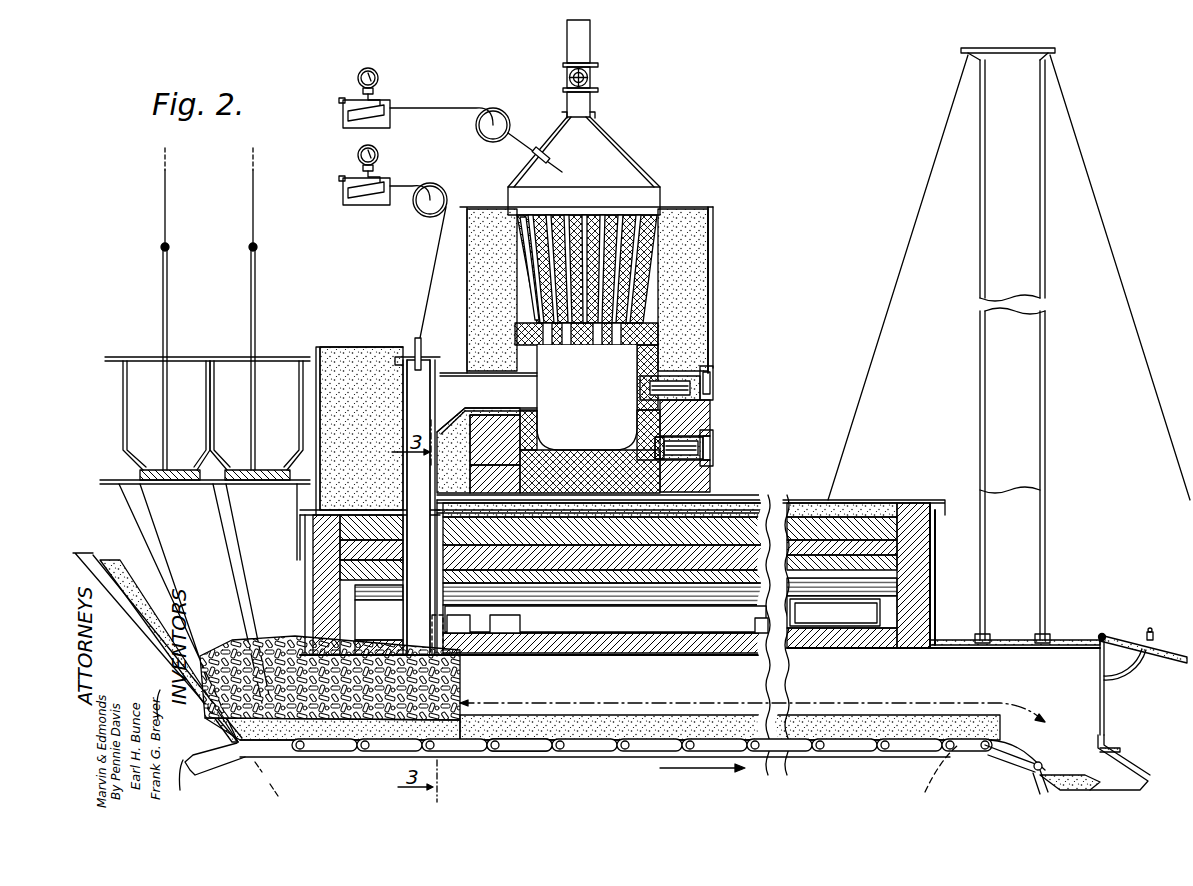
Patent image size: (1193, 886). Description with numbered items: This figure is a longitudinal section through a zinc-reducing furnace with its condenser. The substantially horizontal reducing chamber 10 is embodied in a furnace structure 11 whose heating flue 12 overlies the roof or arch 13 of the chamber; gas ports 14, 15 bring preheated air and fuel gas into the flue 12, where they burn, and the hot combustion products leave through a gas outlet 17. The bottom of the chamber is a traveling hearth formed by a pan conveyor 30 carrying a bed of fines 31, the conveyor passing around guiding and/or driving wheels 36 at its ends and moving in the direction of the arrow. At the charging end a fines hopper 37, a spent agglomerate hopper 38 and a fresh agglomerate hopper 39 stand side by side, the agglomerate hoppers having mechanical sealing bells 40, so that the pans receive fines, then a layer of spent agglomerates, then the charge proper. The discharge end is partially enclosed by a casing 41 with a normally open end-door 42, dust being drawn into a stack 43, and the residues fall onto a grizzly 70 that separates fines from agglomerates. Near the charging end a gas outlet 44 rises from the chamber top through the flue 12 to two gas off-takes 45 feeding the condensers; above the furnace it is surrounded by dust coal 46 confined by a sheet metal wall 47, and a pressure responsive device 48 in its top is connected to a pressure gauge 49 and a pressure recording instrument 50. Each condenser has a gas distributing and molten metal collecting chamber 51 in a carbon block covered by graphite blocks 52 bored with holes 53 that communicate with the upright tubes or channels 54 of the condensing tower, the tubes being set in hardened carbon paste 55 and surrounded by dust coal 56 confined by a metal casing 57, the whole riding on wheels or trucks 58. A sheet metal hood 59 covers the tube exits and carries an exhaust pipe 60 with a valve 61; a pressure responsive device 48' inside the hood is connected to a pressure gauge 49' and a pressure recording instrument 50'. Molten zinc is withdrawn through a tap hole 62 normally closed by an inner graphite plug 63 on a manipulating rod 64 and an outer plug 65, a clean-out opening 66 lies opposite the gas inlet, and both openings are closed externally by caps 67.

The reducing chamber 10 is at (544, 635).
The furnace structure 11 is at (862, 500).
The heating flue 12 is at (605, 619).
The roof or arch 13 is at (736, 632).
The gas port 14 is at (460, 630).
The gas port 15 is at (510, 630).
The gas outlet 17 is at (835, 613).
The pan conveyor 30 is at (580, 746).
The bed of fines 31 is at (518, 724).
The guiding and/or driving wheels 36 is at (270, 774).
The fines hopper 37 is at (118, 598).
The spent agglomerate hopper 38 is at (205, 445).
The fresh agglomerate hopper 39 is at (256, 425).
The mechanical sealing bells 40 is at (185, 484).
The casing 41 is at (1070, 637).
The end-door 42 is at (1158, 655).
The stack 43 is at (1035, 388).
The gas outlet 44 is at (419, 507).
The gas off-takes 45 is at (487, 403).
The dust coal 46 is at (366, 350).
The sheet metal wall 47 is at (316, 347).
The pressure responsive device 48 is at (412, 288).
The pressure responsive device 48' is at (522, 152).
The pressure gauge 49 is at (393, 206).
The pressure gauge 49' is at (424, 122).
The pressure recording instrument 50 is at (348, 165).
The pressure recording instrument 50' is at (388, 82).
The gas distributing and molten metal collecting chamber 51 is at (587, 397).
The graphite blocks 52 is at (665, 334).
The holes 53 is at (572, 346).
The upright tubes or channels 54 is at (567, 289).
The hardened carbon paste 55 is at (632, 237).
The dust coal 56 is at (676, 302).
The metal casing 57 is at (712, 342).
The wheels or trucks 58 is at (712, 482).
The sheet metal hood 59 is at (628, 167).
The exhaust pipe 60 is at (591, 50).
The valve 61 is at (598, 77).
The tap hole 62 is at (690, 423).
The inner graphite plug 63 is at (655, 448).
The manipulating rod 64 is at (702, 441).
The outer plug 65 is at (703, 452).
The clean-out opening 66 is at (668, 378).
The caps 67 is at (713, 382).
The grizzly 70 is at (1056, 778).